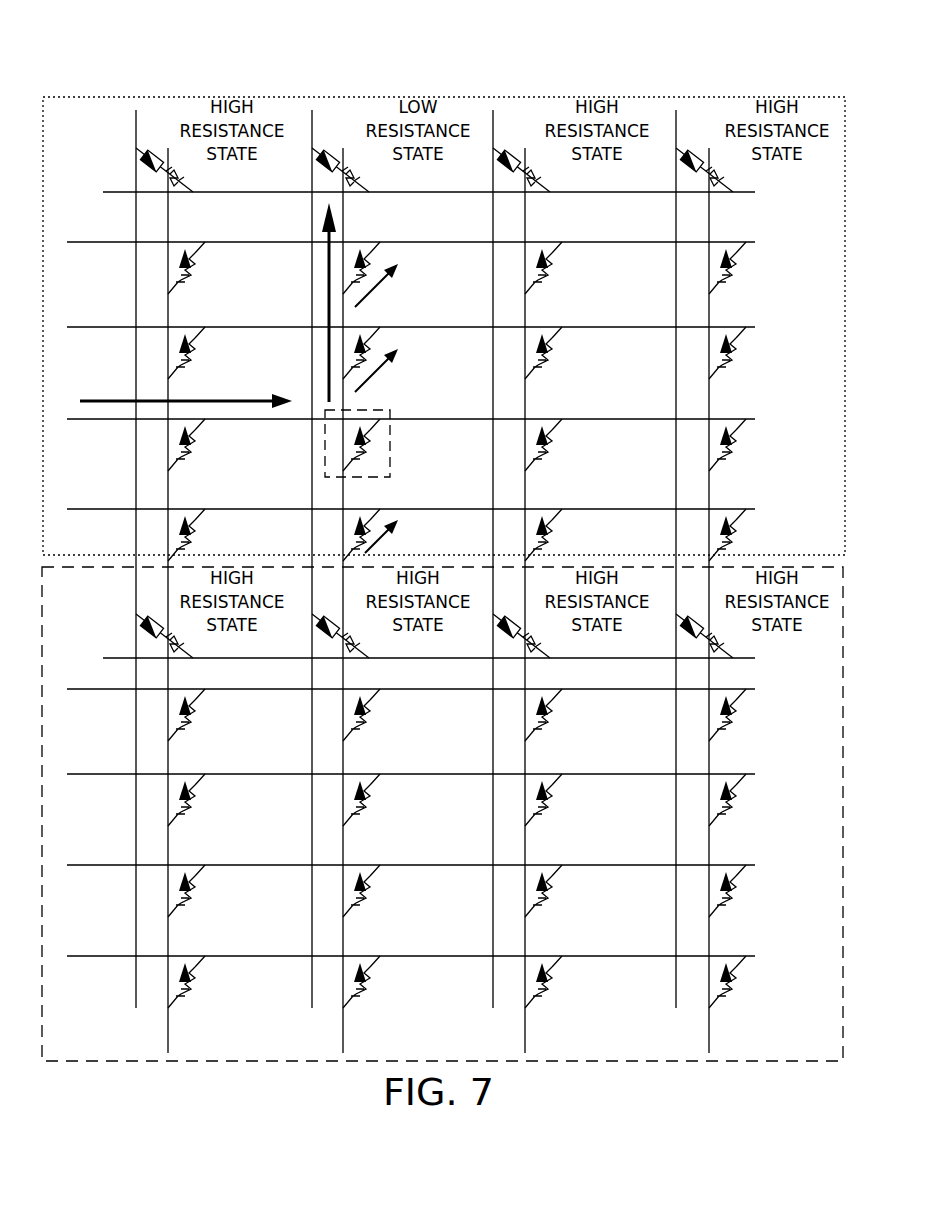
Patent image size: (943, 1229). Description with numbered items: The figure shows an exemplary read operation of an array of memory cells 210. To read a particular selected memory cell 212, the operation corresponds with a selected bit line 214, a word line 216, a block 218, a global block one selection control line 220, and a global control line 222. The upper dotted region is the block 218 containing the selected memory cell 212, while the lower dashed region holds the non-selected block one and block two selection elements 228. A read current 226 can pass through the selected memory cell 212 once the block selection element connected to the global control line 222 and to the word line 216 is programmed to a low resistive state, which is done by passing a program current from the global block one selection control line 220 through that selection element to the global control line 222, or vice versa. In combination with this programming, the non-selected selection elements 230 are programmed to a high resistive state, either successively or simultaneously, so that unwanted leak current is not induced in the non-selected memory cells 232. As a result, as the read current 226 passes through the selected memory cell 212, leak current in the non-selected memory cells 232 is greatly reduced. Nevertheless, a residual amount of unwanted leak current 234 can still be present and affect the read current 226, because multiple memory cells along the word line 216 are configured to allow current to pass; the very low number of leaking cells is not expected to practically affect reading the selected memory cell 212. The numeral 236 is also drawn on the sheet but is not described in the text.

The array of memory cells 210 is at (633, 41).
The selected memory cell 212 is at (390, 447).
The selected bit line 214 is at (757, 413).
The word line 216 is at (342, 1020).
The block 218 is at (826, 97).
The global block 1 selection control line 220 is at (122, 193).
The global control line 222 is at (210, 400).
The read current 226 is at (310, 980).
The non-selected block 1 and block 2 selection elements 228 is at (810, 1062).
The non-selected selection elements 230 is at (512, 606).
The non-selected memory cells 232 is at (748, 728).
The residual unwanted leak current 234 is at (377, 292).
The select transistor 236 is at (136, 177).